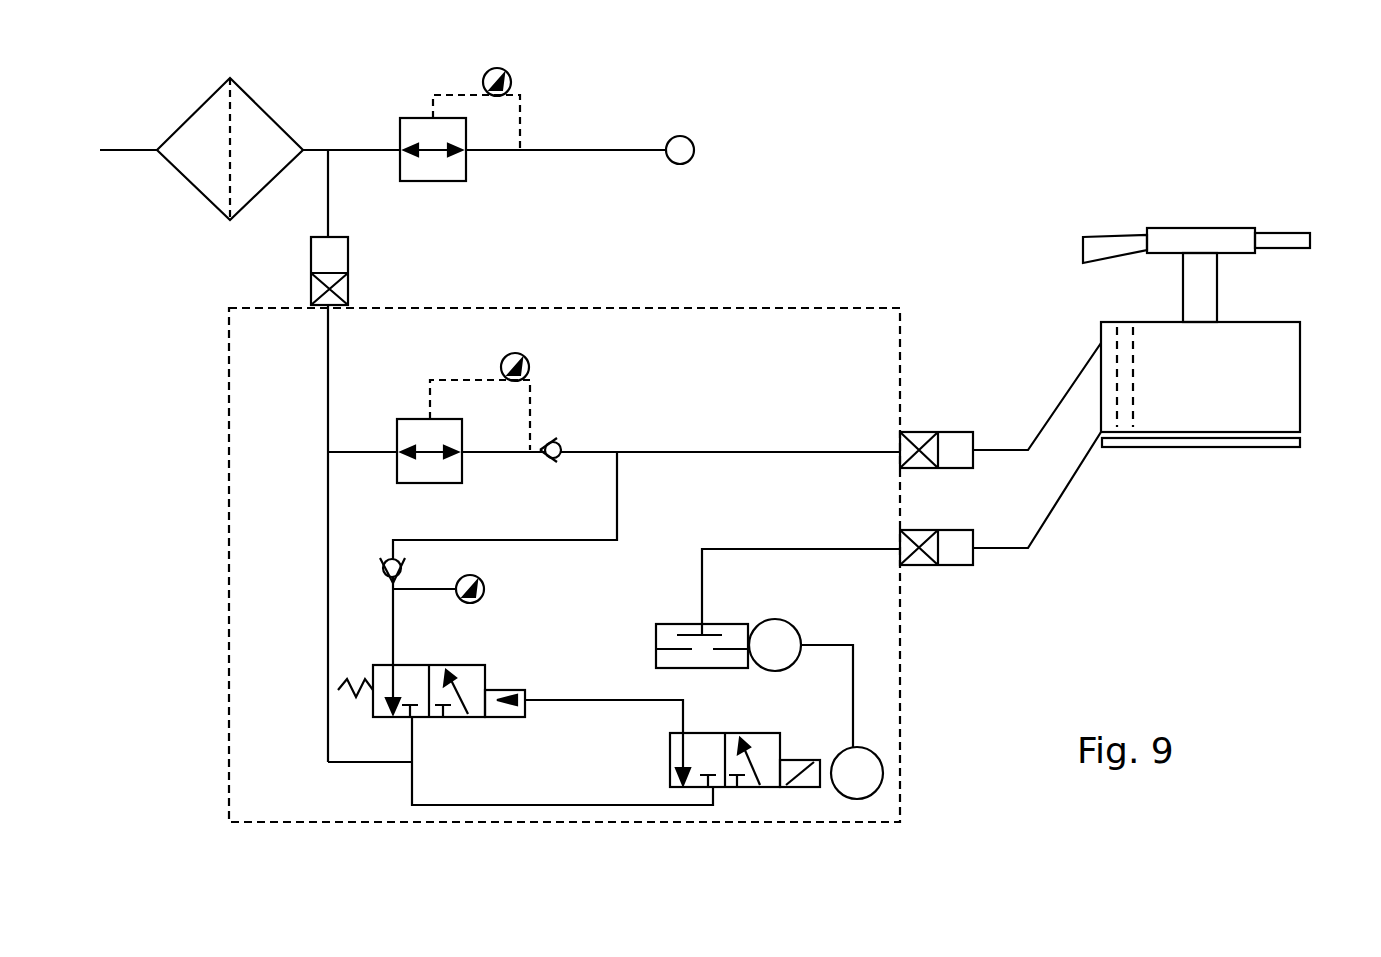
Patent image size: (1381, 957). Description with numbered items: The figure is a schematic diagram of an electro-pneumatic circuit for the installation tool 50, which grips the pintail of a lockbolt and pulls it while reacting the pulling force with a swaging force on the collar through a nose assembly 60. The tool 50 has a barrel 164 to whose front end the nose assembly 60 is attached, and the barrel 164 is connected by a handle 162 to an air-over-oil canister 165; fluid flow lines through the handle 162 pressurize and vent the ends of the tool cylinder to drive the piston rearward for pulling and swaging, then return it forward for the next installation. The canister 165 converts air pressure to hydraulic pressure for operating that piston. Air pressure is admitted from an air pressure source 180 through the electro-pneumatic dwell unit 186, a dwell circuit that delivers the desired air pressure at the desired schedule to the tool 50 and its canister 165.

The installation tool 50 is at (1158, 308).
The nose assembly 60 is at (1268, 228).
The handle 162 is at (1220, 286).
The barrel 164 is at (1173, 228).
The air-over-oil canister 165 is at (1302, 380).
The air pressure source 180 is at (694, 147).
The electro-pneumatic dwell unit 186 is at (805, 852).